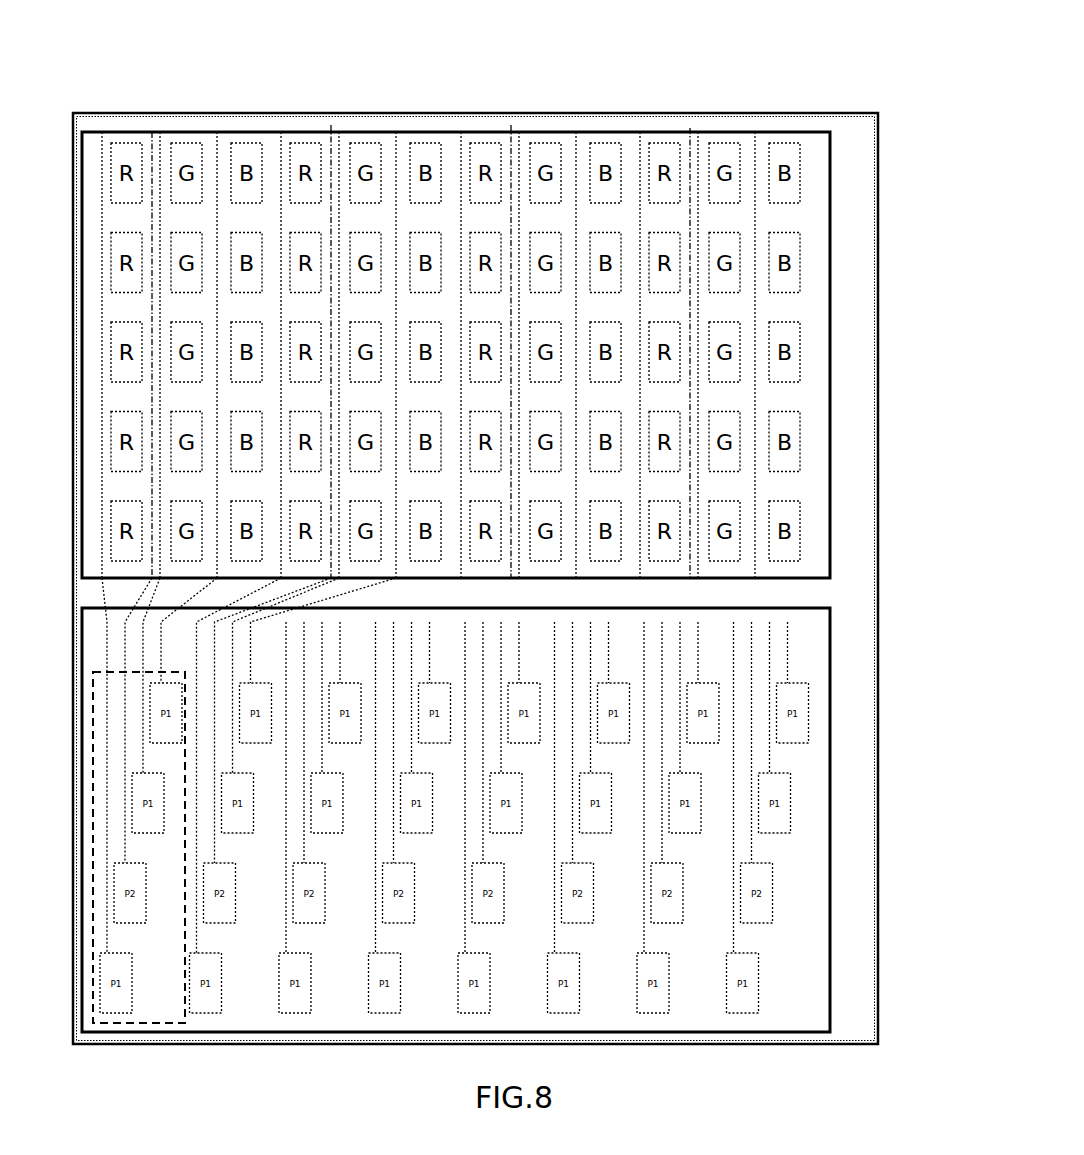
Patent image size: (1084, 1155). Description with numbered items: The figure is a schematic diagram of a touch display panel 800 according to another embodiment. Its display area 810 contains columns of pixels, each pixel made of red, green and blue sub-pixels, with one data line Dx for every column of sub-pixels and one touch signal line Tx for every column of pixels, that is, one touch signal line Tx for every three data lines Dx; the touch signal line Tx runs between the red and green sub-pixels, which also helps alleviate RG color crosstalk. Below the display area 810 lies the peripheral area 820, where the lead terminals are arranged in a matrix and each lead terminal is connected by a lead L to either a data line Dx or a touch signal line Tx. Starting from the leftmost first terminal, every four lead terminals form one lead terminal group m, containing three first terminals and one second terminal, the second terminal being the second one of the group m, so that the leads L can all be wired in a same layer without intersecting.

The touch display panel 800 is at (765, 113).
The display area 810 is at (830, 278).
The peripheral area 820 is at (830, 808).
The data line Dx is at (102, 132).
The touch signal line Tx is at (152, 132).
The lead L is at (788, 658).
The lead terminal group m is at (93, 762).